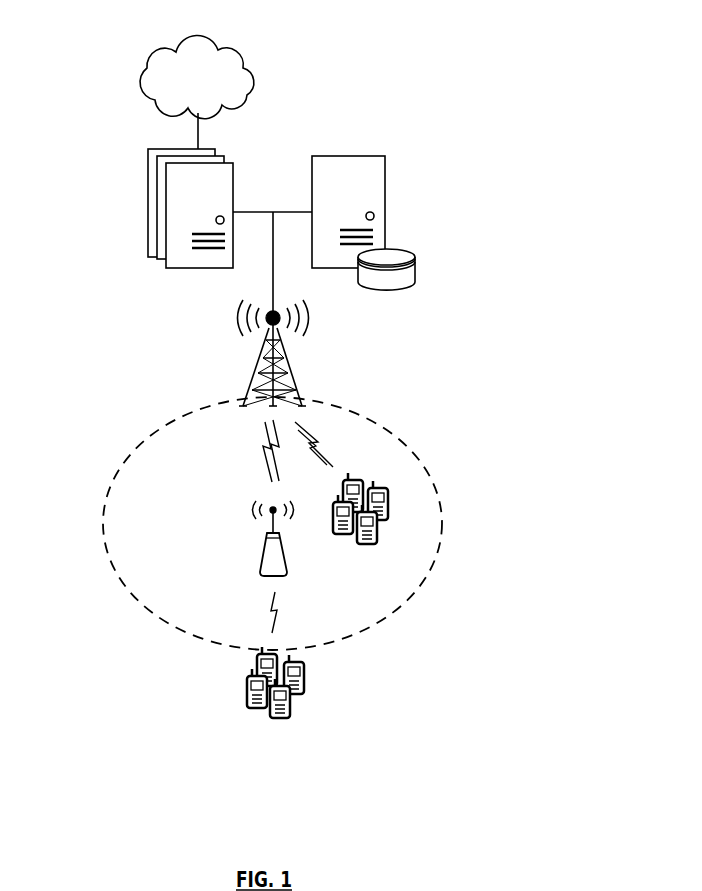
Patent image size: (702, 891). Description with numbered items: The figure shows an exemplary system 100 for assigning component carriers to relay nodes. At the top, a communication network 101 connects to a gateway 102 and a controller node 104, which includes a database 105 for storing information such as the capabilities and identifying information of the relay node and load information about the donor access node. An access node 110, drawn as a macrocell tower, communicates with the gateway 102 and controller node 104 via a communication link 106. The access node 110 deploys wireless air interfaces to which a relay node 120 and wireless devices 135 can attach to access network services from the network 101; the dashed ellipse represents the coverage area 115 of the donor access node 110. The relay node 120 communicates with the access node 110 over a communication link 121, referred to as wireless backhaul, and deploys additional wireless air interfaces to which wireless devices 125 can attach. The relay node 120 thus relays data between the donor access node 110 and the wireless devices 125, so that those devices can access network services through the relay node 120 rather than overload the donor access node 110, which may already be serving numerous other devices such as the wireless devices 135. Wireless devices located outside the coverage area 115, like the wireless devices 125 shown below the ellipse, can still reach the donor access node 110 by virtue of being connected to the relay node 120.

The system 100 is at (331, 48).
The communication network 101 is at (215, 87).
The gateway 102 is at (148, 185).
The controller node 104 is at (385, 197).
The database 105 is at (415, 272).
The communication link 106 is at (273, 263).
The access node 110 is at (250, 390).
The coverage area 115 is at (110, 487).
The relay node 120 is at (262, 565).
The communication link 121 is at (243, 453).
The wireless devices 125 is at (230, 710).
The wireless devices 135 is at (395, 541).